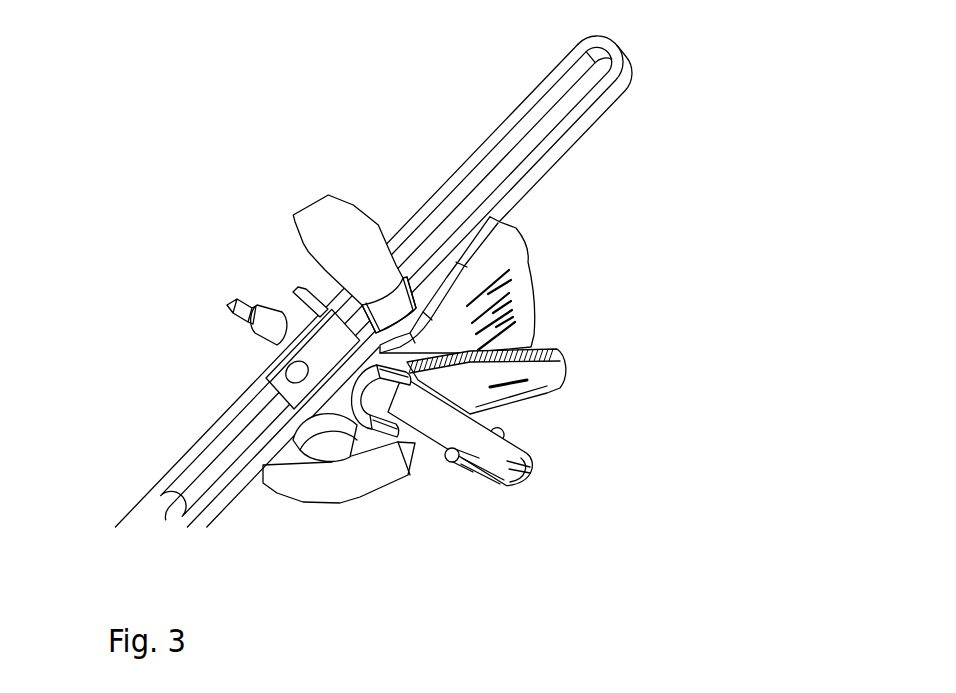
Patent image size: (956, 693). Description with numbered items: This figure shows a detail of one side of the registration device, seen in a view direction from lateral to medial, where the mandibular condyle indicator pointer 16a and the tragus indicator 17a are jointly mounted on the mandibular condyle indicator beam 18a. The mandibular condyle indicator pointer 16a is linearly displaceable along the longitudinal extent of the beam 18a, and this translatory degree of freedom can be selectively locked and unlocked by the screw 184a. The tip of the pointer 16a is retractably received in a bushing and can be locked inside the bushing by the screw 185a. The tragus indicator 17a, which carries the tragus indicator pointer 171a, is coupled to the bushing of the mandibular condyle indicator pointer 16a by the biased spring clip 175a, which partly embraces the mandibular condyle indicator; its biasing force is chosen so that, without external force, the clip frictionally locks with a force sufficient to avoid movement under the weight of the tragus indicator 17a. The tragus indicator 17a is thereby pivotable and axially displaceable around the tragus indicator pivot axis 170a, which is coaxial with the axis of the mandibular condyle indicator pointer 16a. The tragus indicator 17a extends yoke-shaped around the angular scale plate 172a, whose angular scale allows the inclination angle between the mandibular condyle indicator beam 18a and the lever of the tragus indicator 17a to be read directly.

The mandibular condyle indicator beam 18a is at (437, 187).
The screw 184a is at (338, 223).
The tragus indicator pointer 171a is at (305, 289).
The mandibular condyle indicator pointer 16a is at (278, 327).
The angular scale plate 172a is at (500, 254).
The tragus indicator 17a is at (537, 372).
The tragus indicator pivot axis 170a is at (602, 518).
The biased spring clip 175a is at (417, 450).
The screw 185a is at (362, 478).